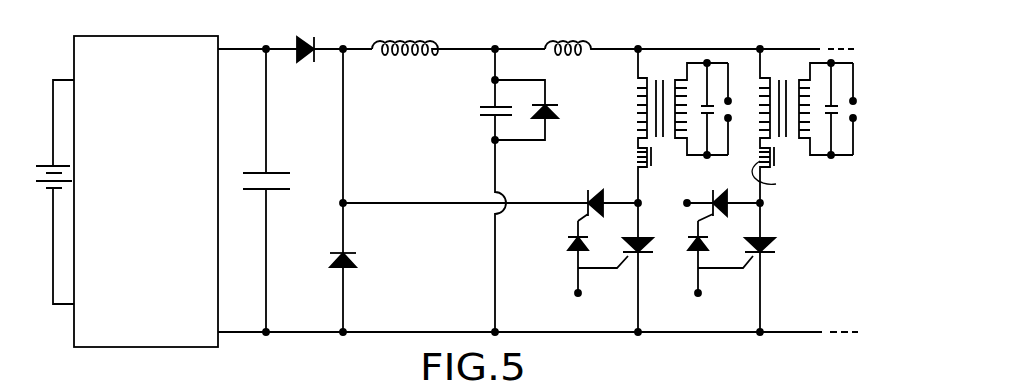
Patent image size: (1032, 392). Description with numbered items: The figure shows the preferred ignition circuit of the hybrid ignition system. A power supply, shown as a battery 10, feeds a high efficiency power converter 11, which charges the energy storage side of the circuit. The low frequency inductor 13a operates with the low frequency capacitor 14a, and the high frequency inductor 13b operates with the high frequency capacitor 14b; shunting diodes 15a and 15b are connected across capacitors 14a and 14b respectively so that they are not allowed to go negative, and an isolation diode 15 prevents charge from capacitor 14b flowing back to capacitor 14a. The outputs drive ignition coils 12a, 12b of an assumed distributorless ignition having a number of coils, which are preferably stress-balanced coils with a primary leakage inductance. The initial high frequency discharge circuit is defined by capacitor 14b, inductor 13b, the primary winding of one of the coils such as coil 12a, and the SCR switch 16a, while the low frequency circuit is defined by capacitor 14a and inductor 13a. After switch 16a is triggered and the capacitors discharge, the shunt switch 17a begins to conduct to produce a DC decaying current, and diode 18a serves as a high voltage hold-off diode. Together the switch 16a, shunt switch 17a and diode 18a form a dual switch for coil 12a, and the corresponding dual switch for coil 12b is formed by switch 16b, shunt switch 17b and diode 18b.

The battery 10 is at (50, 192).
The power converter 11 is at (130, 289).
The ignition coil 12a is at (665, 126).
The ignition coil 12b is at (804, 126).
The low frequency inductor 13a is at (446, 33).
The high frequency inductor 13b is at (590, 33).
The low frequency capacitor 14a is at (262, 190).
The high frequency capacitor 14b is at (482, 190).
The isolation diode 15 is at (306, 37).
The shunting diode 15a is at (362, 190).
The shunting diode 15b is at (545, 110).
The switch 16a is at (629, 267).
The switch 16b is at (755, 267).
The shunt switch 17a is at (492, 194).
The shunt switch 17b is at (719, 194).
The high voltage hold-off diode 18a is at (557, 258).
The high voltage hold-off diode 18b is at (686, 255).